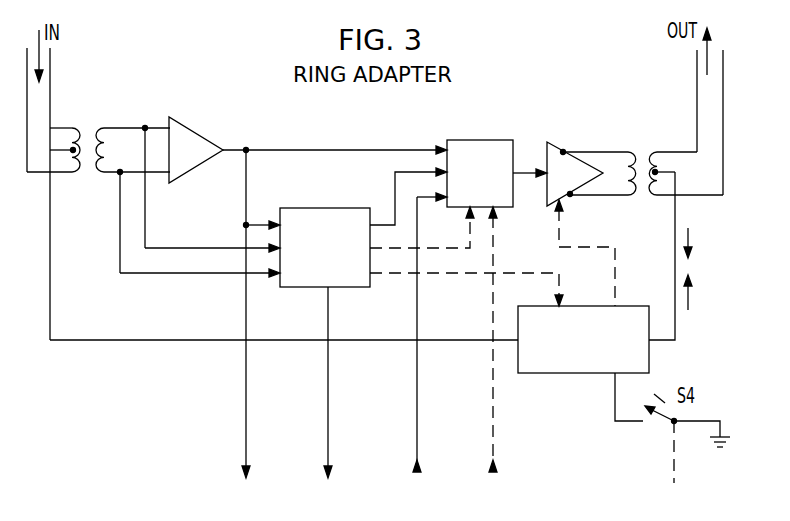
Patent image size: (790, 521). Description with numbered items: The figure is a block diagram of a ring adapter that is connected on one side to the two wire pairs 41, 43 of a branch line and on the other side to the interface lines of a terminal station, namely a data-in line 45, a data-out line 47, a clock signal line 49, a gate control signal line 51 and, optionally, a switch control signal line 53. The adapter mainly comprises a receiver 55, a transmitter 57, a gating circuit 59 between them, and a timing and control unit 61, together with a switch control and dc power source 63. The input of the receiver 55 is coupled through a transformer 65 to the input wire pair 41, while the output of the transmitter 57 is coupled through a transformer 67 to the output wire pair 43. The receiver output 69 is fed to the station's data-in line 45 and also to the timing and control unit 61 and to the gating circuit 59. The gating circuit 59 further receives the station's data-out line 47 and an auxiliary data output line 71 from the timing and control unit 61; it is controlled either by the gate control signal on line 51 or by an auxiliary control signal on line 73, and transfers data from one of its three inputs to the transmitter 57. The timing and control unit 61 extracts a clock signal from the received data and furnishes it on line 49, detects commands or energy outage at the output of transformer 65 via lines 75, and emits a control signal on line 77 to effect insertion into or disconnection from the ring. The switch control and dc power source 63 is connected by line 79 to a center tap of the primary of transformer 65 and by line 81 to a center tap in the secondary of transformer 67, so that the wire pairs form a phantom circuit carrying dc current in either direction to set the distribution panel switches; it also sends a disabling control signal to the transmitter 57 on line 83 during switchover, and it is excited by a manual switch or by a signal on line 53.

The input wire pair 41 is at (28, 125).
The output wire pair 43 is at (723, 83).
The data-in line 45 is at (245, 410).
The data-out line 47 is at (416, 412).
The clock signal line 49 is at (327, 412).
The gate control signal line 51 is at (493, 405).
The switch control signal line 53 is at (672, 457).
The receiver 55 is at (190, 117).
The transmitter 57 is at (553, 146).
The gating circuit 59 is at (482, 140).
The timing and control unit 61 is at (355, 287).
The switch control and dc power source 63 is at (553, 373).
The transformer 65 is at (82, 145).
The transformer 67 is at (637, 168).
The receiver output 69 is at (232, 149).
The auxiliary data output line 71 is at (395, 178).
The auxiliary control signal line 73 is at (463, 233).
The lines 75 is at (192, 249).
The control signal line 77 is at (428, 274).
The line 79 is at (167, 340).
The line 81 is at (676, 212).
The disabling control signal line 83 is at (616, 257).